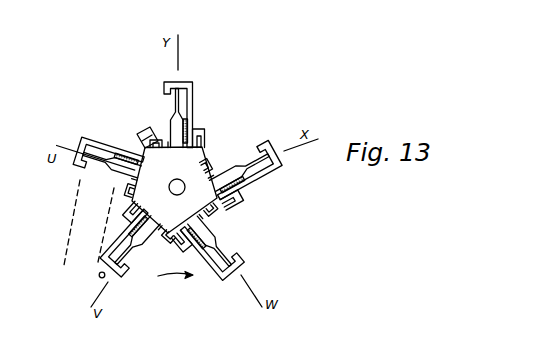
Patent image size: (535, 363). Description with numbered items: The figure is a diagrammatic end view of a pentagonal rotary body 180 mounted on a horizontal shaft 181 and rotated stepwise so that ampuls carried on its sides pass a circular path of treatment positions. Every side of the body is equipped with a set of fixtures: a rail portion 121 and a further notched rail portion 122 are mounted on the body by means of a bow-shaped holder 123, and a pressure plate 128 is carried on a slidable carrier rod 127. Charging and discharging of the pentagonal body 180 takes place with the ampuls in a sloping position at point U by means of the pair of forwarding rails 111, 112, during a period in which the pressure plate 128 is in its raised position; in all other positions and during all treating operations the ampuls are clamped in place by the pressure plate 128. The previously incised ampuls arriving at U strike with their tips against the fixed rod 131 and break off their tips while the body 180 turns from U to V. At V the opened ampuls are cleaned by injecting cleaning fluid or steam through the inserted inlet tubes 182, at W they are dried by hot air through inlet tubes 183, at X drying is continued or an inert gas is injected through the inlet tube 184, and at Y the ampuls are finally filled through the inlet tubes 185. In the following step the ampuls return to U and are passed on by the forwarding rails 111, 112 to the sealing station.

The forwarding rail 111 is at (120, 192).
The forwarding rail 112 is at (80, 187).
The rail portion 121 is at (126, 180).
The notched rail portion 122 is at (176, 96).
The bow-shaped holder 123 is at (192, 85).
The carrier rod 127 is at (203, 140).
The pressure plate 128 is at (190, 128).
The fixed rod 131 is at (100, 279).
The pentagonal rotary body 180 is at (213, 203).
The horizontal shaft 181 is at (180, 180).
The inlet tubes 182 is at (106, 289).
The inlet tubes 183 is at (244, 289).
The inlet tube 184 is at (298, 151).
The inlet tubes 185 is at (180, 63).